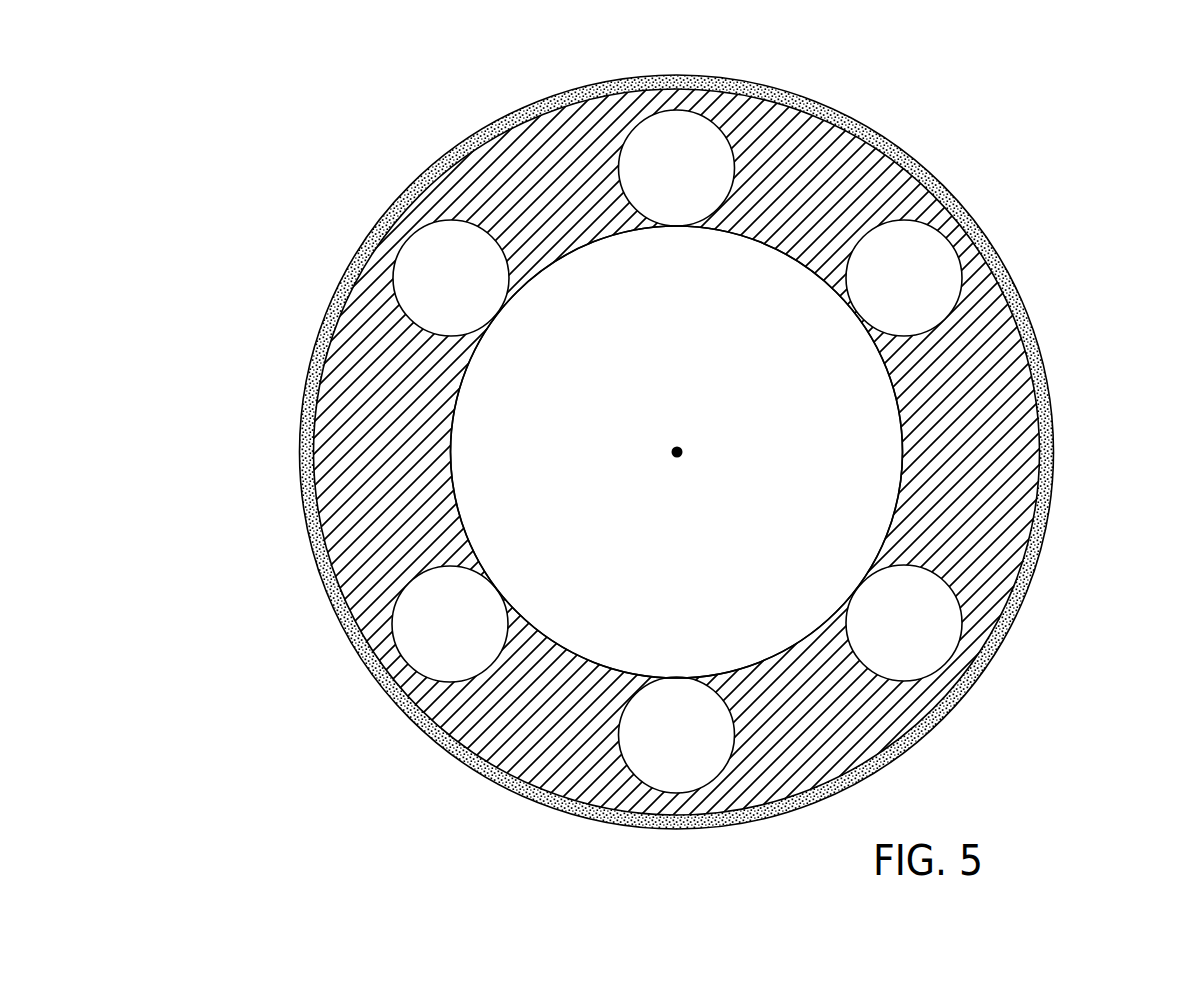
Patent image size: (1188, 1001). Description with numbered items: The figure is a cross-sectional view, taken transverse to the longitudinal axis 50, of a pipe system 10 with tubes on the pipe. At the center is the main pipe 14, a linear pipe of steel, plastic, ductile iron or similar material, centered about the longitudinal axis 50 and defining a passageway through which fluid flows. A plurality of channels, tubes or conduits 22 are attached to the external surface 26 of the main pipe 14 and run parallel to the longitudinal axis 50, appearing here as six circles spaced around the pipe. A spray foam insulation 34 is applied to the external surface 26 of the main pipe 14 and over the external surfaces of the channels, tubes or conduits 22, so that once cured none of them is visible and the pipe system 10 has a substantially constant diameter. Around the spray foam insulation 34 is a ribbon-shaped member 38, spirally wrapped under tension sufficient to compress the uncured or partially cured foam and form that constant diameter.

The pipe system 10 is at (185, 265).
The main pipe 14 is at (890, 388).
The channels, tubes or conduits 22 is at (667, 170).
The external surface 26 is at (907, 453).
The spray foam insulation 34 is at (350, 483).
The ribbon-shaped member 38 is at (890, 157).
The longitudinal axis 50 is at (672, 452).